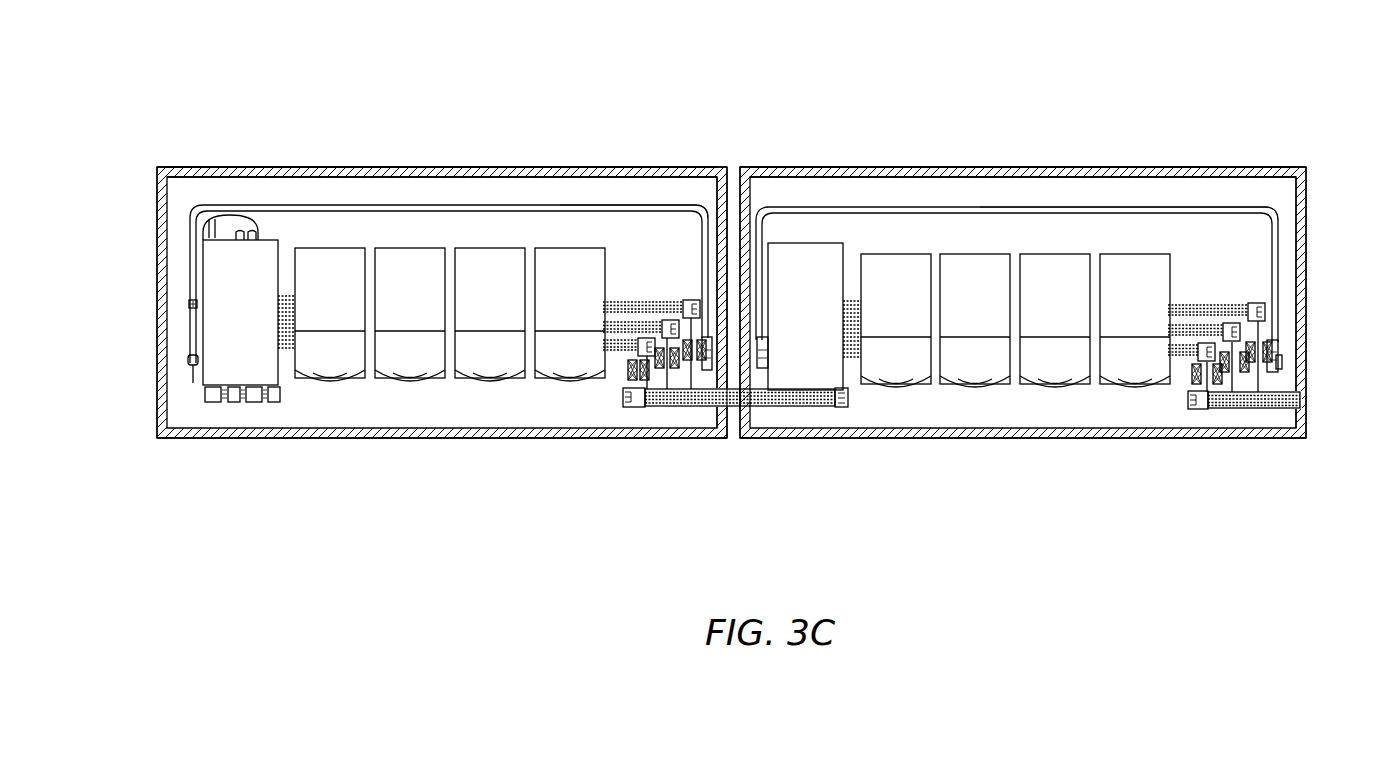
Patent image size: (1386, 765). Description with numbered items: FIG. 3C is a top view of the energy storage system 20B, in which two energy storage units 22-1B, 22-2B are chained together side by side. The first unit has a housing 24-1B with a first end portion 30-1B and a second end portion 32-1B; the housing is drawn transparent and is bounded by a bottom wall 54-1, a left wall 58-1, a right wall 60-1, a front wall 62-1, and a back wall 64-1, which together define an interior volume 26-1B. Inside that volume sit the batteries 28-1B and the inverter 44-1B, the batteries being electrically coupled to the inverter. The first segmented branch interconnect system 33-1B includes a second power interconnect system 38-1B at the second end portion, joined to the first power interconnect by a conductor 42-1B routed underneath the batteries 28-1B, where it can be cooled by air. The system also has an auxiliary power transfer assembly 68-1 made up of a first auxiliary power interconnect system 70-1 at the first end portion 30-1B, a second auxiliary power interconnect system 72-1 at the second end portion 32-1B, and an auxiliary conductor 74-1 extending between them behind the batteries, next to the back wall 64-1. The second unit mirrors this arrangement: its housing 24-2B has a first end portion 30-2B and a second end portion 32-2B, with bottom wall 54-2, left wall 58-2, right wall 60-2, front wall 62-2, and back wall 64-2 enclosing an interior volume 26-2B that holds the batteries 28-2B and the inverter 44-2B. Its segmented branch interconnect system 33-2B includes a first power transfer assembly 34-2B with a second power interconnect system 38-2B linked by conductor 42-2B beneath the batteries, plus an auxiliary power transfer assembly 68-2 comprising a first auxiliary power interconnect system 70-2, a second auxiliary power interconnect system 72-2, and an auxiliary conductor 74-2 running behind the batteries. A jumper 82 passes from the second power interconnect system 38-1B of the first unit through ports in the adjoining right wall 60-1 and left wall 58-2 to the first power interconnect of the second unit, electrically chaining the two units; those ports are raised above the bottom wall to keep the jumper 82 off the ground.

The energy storage system 20B is at (607, 42).
The first end portion 30-1B is at (170, 165).
The first end portion 30-2B is at (751, 165).
The housing 24-1B is at (214, 167).
The housing 24-2B is at (813, 167).
The back wall 64-1 is at (273, 176).
The back wall 64-2 is at (1093, 175).
The bottom wall 54-1 is at (332, 186).
The bottom wall 54-2 is at (880, 187).
The first energy storage unit 22-1B is at (471, 167).
The second energy storage unit 22-2B is at (961, 167).
The interior volume 26-1B is at (552, 186).
The interior volume 26-2B is at (1185, 188).
The auxiliary conductor 74-1 is at (623, 204).
The auxiliary conductor 74-2 is at (1038, 206).
The second end portion 32-1B is at (697, 164).
The second end portion 32-2B is at (1284, 160).
The left wall 58-1 is at (160, 256).
The left wall 58-2 is at (742, 410).
The inverter 44-1B is at (213, 289).
The inverter 44-2B is at (830, 375).
The first auxiliary power interconnect system 70-1 is at (190, 351).
The first auxiliary power interconnect system 70-2 is at (767, 355).
The auxiliary power transfer assembly 68-1 is at (182, 362).
The auxiliary power transfer assembly 68-2 is at (1284, 369).
The conductor 42-1B is at (288, 350).
The conductor 42-2B is at (856, 341).
The front wall 62-1 is at (326, 439).
The front wall 62-2 is at (1012, 439).
The batteries 28-1B is at (474, 397).
The batteries 28-2B is at (1076, 397).
The second power interconnect system 38-1B is at (626, 391).
The second power interconnect system 38-2B is at (1208, 410).
The first segmented branch interconnect system 33-1B is at (651, 410).
The segmented branch interconnect system 33-2B is at (1238, 415).
The second auxiliary power interconnect system 72-1 is at (708, 370).
The second auxiliary power interconnect system 72-2 is at (1281, 352).
The right wall 60-1 is at (722, 412).
The right wall 60-2 is at (1307, 410).
The jumper 82 is at (733, 408).
The first power transfer assembly 34-2B is at (840, 408).